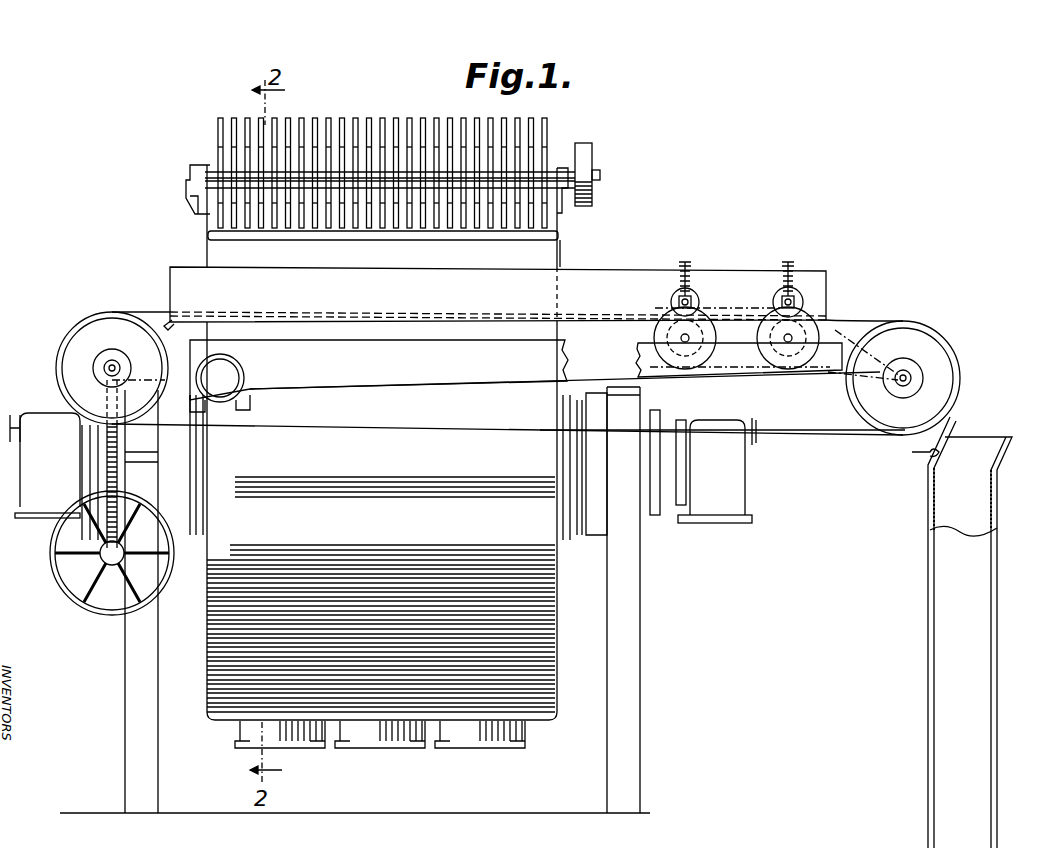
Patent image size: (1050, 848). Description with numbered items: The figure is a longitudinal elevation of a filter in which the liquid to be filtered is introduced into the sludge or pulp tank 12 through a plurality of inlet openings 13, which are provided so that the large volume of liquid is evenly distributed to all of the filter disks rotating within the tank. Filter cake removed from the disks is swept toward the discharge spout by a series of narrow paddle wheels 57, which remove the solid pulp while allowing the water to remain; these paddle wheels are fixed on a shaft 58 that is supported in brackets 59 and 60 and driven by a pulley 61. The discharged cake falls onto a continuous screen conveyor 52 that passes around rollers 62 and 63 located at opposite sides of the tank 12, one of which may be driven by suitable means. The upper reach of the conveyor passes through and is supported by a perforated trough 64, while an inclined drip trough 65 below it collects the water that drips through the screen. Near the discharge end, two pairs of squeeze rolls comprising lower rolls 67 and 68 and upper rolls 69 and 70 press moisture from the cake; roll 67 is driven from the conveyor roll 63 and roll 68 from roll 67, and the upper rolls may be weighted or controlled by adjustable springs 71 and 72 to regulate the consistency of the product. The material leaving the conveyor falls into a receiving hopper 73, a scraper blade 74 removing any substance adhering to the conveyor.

The sludge or pulp tank 12 is at (543, 720).
The inlet openings 13 is at (392, 744).
The screen conveyor 52 is at (402, 434).
The paddle wheels 57 is at (340, 128).
The shaft 58 is at (210, 170).
The bracket 59 is at (200, 200).
The bracket 60 is at (565, 200).
The pulley 61 is at (588, 156).
The conveyor roller 62 is at (80, 332).
The conveyor roller 63 is at (945, 372).
The perforated trough 64 is at (178, 278).
The inclined drip trough 65 is at (456, 384).
The lower squeeze roll 67 is at (790, 368).
The lower squeeze roll 68 is at (660, 346).
The upper squeeze roll 69 is at (805, 314).
The upper squeeze roll 70 is at (700, 314).
The adjustable spring 71 is at (800, 282).
The adjustable spring 72 is at (690, 282).
The receiving hopper 73 is at (926, 503).
The scraper blade 74 is at (912, 452).